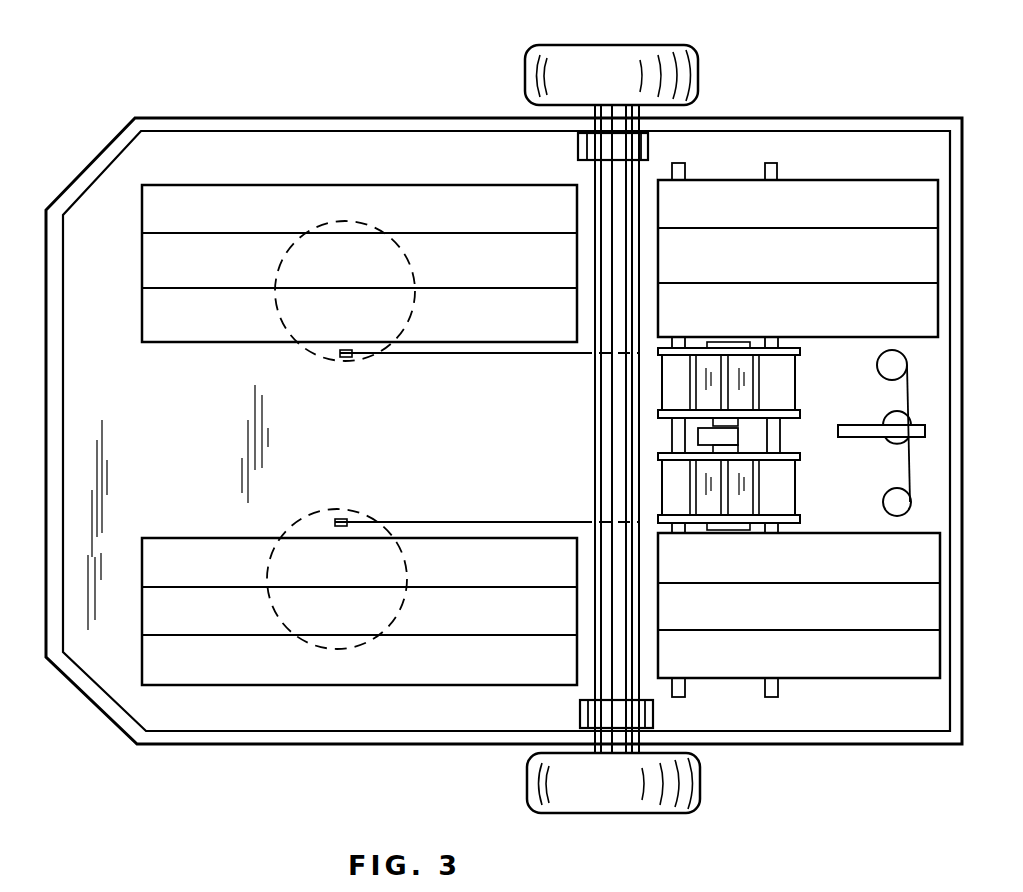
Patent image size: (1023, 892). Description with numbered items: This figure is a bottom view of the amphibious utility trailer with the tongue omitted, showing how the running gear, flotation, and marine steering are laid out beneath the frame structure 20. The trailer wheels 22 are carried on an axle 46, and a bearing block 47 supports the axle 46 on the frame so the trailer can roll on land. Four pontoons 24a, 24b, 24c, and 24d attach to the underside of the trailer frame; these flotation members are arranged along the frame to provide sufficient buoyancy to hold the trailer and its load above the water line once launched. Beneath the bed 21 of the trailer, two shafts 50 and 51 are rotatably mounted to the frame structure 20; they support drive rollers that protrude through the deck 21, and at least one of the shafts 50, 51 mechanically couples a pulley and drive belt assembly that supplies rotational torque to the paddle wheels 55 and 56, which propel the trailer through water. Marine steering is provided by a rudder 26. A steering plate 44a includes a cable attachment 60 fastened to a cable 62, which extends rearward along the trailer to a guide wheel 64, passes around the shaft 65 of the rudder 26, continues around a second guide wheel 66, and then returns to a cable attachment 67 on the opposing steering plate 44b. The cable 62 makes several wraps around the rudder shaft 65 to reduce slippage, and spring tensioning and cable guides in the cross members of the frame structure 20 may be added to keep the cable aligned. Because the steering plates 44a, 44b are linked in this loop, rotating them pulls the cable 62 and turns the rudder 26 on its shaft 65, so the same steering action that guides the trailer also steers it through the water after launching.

The frame structure 20 is at (236, 118).
The bed 21 is at (174, 410).
The trailer wheels 22 is at (552, 50).
The pontoon 24a is at (343, 185).
The pontoon 24b is at (215, 538).
The pontoon 24c is at (905, 180).
The pontoon 24d is at (812, 680).
The rudder 26 is at (868, 427).
The steering plate 44a is at (323, 352).
The steering plate 44b is at (305, 521).
The axle 46 is at (600, 120).
The bearing block 47 is at (622, 150).
The shaft 50 is at (770, 163).
The shaft 51 is at (680, 163).
The paddle wheel 55 is at (797, 382).
The paddle wheel 56 is at (797, 485).
The cable attachment 60 is at (347, 357).
The cable 62 is at (545, 353).
The guide wheel 64 is at (900, 363).
The rudder shaft 65 is at (895, 445).
The guide wheel 66 is at (905, 502).
The cable attachment 67 is at (340, 520).